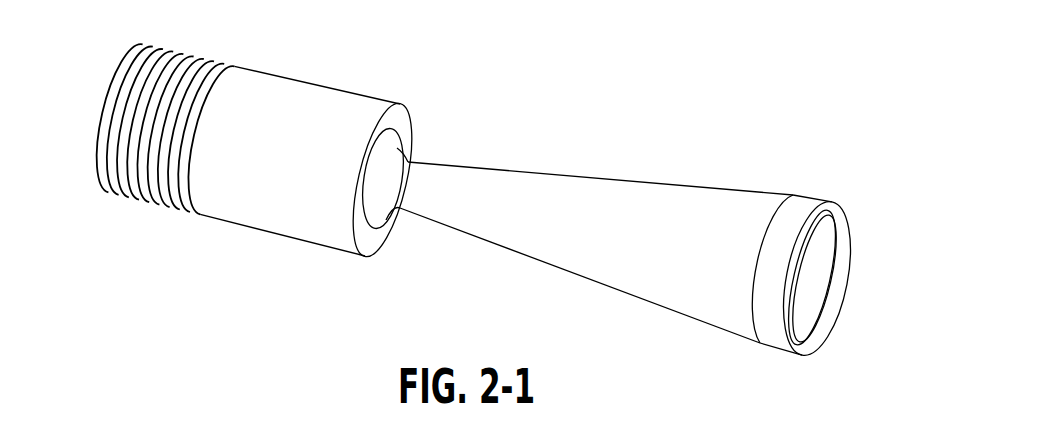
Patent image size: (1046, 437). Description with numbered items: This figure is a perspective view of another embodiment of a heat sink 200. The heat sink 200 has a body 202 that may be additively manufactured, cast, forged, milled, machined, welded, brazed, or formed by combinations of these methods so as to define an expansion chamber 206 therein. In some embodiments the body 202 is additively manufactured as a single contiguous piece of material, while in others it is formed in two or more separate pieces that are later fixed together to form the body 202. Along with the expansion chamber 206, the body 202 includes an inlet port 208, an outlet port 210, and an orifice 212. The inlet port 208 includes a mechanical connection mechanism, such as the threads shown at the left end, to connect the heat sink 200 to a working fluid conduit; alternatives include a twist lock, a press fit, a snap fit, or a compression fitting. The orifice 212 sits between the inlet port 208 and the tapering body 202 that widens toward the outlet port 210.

The heat sink 200 is at (835, 135).
The body 202 is at (641, 182).
The expansion chamber 206 is at (823, 283).
The inlet port 208 is at (95, 102).
The outlet port 210 is at (812, 334).
The orifice 212 is at (423, 152).